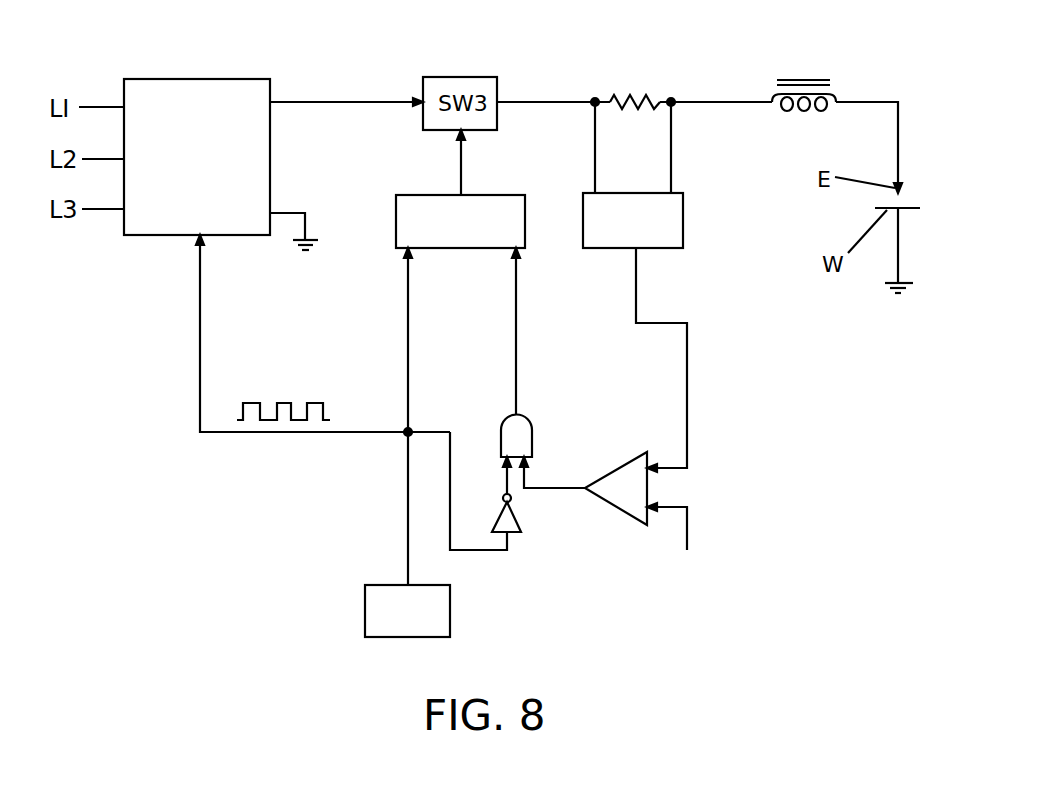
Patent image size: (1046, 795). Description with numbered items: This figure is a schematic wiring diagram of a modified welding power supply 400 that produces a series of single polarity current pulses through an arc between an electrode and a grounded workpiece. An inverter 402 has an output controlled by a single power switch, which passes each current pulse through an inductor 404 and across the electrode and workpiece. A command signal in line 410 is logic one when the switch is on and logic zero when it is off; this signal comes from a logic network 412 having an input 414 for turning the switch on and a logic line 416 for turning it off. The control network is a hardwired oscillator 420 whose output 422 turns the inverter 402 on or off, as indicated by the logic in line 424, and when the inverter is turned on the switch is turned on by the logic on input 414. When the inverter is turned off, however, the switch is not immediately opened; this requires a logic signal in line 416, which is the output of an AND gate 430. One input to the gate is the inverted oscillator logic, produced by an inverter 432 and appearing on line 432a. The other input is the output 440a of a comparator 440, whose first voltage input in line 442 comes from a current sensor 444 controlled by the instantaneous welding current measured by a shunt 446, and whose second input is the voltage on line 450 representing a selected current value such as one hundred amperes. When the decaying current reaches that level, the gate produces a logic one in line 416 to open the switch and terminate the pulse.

The welding power supply 400 is at (583, 53).
The inverter 402 is at (196, 79).
The inductor 404 is at (805, 80).
The command signal line 410 is at (461, 162).
The logic network 412 is at (395, 207).
The input line 414 is at (407, 305).
The logic line 416 is at (517, 307).
The oscillator 420 is at (365, 607).
The oscillator output 422 is at (408, 500).
The logic line 424 is at (262, 433).
The AND gate 430 is at (530, 420).
The inverter 432 is at (515, 532).
The inverted logic line 432a is at (505, 470).
The comparator 440 is at (617, 465).
The comparator output 440a is at (557, 492).
The first voltage input line 442 is at (687, 413).
The current sensor 444 is at (683, 215).
The shunt 446 is at (642, 97).
The reference voltage line 450 is at (687, 525).